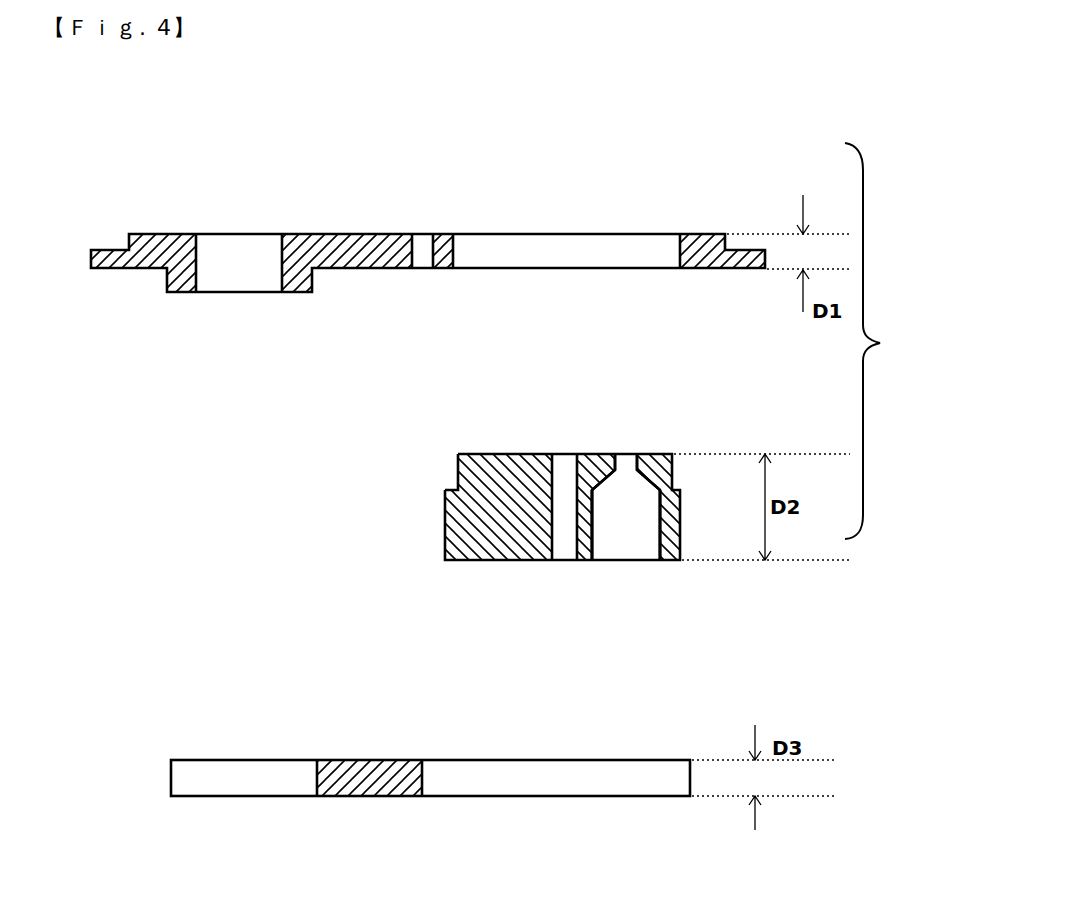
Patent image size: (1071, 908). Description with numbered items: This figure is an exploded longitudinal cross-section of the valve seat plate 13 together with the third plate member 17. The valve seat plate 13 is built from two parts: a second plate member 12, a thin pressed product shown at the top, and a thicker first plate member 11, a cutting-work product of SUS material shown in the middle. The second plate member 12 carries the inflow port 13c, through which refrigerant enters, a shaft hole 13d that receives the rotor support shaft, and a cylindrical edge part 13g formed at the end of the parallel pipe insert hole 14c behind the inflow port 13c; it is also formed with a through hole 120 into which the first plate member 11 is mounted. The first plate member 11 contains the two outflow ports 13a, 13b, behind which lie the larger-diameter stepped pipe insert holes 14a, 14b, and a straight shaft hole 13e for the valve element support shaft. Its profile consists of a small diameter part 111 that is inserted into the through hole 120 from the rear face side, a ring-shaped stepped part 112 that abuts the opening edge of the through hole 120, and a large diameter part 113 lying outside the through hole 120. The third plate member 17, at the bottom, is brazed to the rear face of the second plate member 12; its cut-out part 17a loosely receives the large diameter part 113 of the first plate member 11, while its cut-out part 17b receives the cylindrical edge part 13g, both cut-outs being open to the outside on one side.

The first plate member 11 is at (683, 515).
The second plate member 12 is at (762, 250).
The valve seat plate 13 is at (884, 341).
The outflow port 13a is at (627, 463).
The outflow port 13b is at (626, 472).
The inflow port 13c is at (188, 234).
The shaft hole 13d is at (420, 234).
The shaft hole 13e is at (558, 508).
The cylindrical edge part 13g is at (180, 270).
The pipe insert hole 14a is at (622, 548).
The pipe insert hole 14b is at (626, 525).
The pipe insert hole 14c is at (233, 273).
The third plate member 17 is at (655, 796).
The cut-out part 17a is at (540, 783).
The cut-out part 17b is at (222, 786).
The small diameter part 111 is at (458, 455).
The ring-shaped stepped part 112 is at (455, 488).
The large diameter part 113 is at (445, 520).
The through hole 120 is at (580, 243).